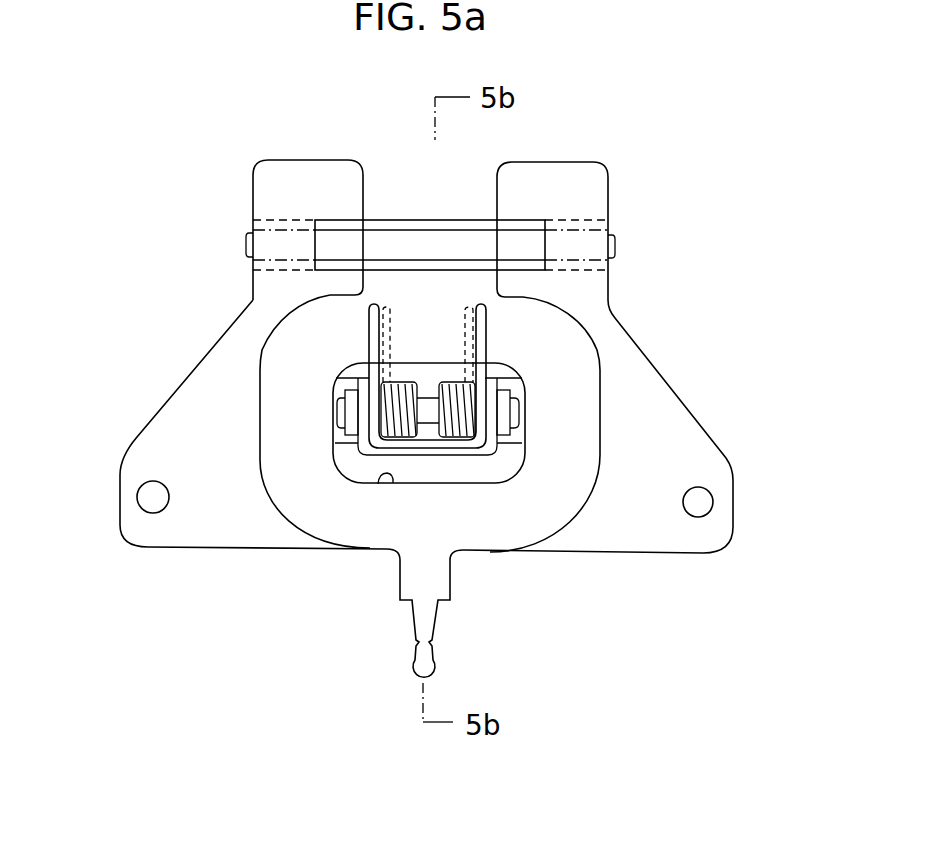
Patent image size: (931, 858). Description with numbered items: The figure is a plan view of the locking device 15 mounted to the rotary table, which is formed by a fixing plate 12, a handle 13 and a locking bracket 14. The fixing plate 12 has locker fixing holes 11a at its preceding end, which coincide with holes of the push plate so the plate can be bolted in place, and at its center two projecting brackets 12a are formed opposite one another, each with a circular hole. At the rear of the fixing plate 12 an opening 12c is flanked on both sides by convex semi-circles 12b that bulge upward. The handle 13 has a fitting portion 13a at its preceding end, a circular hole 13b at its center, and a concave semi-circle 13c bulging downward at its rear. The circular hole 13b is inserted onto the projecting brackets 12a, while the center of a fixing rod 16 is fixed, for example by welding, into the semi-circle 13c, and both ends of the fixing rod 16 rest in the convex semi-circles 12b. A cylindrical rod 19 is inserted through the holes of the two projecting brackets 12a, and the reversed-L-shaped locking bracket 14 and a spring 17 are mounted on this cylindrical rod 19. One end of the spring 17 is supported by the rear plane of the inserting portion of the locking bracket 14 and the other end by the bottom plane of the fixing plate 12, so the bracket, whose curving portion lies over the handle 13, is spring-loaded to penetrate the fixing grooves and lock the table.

The locker fixing holes 11a is at (150, 500).
The fixing plate 12 is at (230, 527).
The projecting brackets 12a is at (343, 407).
The convex semi-circles 12b is at (255, 263).
The opening 12c is at (407, 187).
The handle 13 is at (520, 522).
The fitting portion 13a is at (417, 628).
The circular hole 13b is at (377, 482).
The concave semi-circle 13c is at (463, 227).
The locking bracket 14 is at (478, 327).
The locking device 15 is at (240, 237).
The fixing rod 16 is at (613, 245).
The spring 17 is at (452, 447).
The cylindrical rod 19 is at (519, 407).